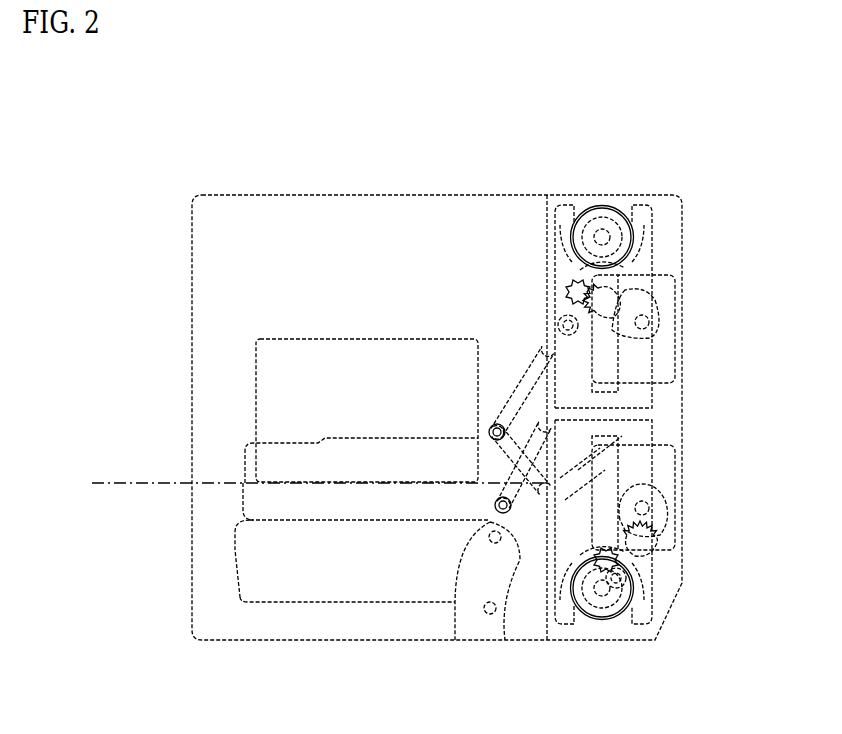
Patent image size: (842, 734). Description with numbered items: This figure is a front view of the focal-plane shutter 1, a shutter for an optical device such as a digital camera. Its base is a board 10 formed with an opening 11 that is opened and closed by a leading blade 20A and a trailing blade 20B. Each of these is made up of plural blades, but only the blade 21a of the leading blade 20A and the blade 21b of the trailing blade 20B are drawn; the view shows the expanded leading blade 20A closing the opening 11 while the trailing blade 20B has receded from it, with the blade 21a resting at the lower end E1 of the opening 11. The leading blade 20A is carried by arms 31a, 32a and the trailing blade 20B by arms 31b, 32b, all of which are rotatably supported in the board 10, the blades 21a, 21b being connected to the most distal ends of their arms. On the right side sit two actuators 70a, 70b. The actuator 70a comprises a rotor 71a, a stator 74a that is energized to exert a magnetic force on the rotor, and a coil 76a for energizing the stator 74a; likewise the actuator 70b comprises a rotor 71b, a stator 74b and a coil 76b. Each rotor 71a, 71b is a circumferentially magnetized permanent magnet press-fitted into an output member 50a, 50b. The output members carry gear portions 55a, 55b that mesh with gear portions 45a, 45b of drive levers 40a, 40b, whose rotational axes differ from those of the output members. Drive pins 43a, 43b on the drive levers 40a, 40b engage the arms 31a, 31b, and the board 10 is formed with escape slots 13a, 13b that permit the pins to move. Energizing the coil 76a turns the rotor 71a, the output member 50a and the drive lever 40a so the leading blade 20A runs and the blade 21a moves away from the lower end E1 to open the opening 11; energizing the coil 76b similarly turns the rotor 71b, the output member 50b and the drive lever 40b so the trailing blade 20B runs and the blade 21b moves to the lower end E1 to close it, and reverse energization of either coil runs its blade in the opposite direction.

The focal-plane shutter 1 is at (703, 185).
The board 10 is at (258, 188).
The opening 11 is at (288, 342).
The escape slot 13a is at (545, 290).
The escape slot 13b is at (548, 642).
The leading blade 20A is at (240, 462).
The trailing blade 20B is at (230, 592).
The blade 21a is at (243, 497).
The blade 21b is at (234, 545).
The arm 31a is at (505, 383).
The arm 31b is at (508, 642).
The arm 32a is at (490, 458).
The arm 32b is at (455, 642).
The drive lever 40a is at (655, 339).
The drive lever 40b is at (655, 508).
The drive pin 43a is at (558, 324).
The drive pin 43b is at (620, 586).
The gear portion 45a is at (598, 350).
The gear portion 45b is at (668, 536).
The output member 50a is at (680, 271).
The output member 50b is at (655, 591).
The gear portion 55a is at (640, 281).
The gear portion 55b is at (625, 581).
The actuator 70a is at (662, 224).
The actuator 70b is at (662, 576).
The rotor 71a is at (600, 230).
The rotor 71b is at (600, 602).
The stator 74a is at (548, 212).
The stator 74b is at (633, 642).
The coil 76a is at (672, 319).
The coil 76b is at (675, 471).
The lower end of the opening E1 is at (306, 484).